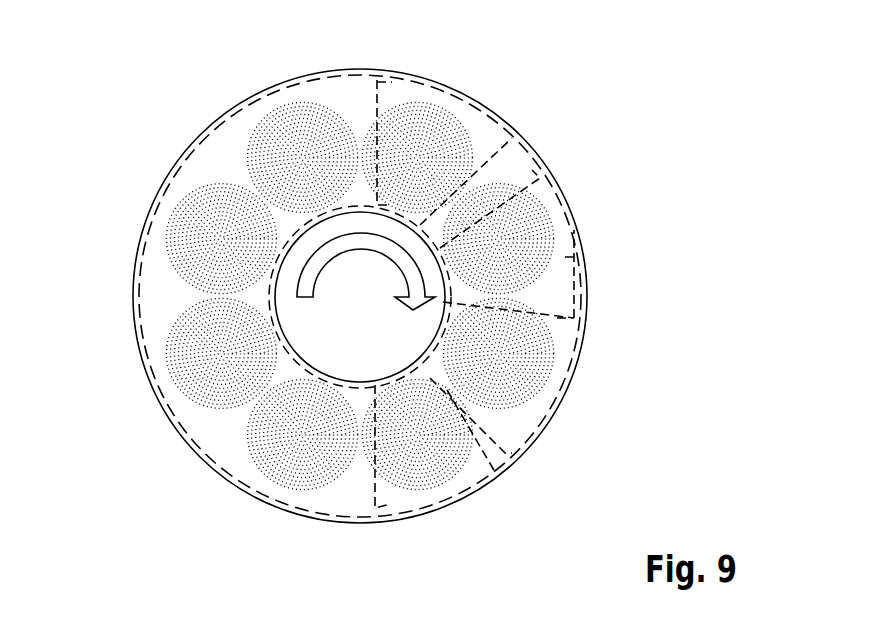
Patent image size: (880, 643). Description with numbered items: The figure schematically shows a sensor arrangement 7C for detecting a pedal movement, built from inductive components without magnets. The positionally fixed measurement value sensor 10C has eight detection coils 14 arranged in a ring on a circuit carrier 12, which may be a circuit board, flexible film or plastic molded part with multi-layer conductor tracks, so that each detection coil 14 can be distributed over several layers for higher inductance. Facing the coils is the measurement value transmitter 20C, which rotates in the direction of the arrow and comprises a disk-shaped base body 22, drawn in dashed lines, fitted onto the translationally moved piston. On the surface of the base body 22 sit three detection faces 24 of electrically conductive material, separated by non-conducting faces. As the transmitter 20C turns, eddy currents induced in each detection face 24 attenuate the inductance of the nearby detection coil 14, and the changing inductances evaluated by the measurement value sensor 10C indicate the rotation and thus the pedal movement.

The measurement value sensor 10C is at (117, 110).
The circuit carrier 12 is at (222, 135).
The detection coil 14 is at (287, 112).
The measurement value transmitter 20C is at (547, 100).
The sensor arrangement 7C is at (603, 80).
The base body 22 is at (586, 318).
The detection face 24 is at (478, 130).